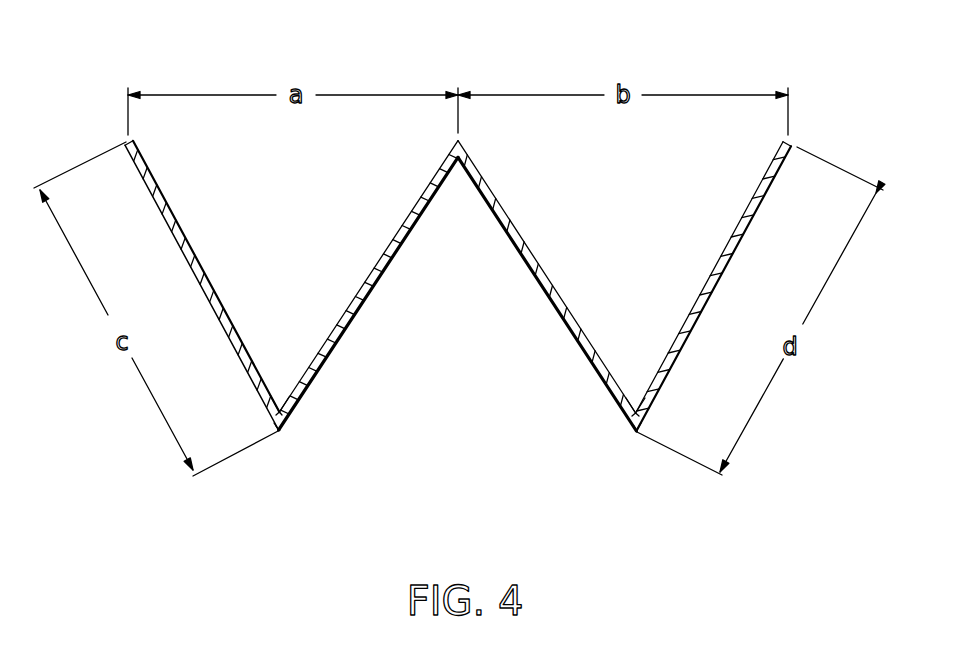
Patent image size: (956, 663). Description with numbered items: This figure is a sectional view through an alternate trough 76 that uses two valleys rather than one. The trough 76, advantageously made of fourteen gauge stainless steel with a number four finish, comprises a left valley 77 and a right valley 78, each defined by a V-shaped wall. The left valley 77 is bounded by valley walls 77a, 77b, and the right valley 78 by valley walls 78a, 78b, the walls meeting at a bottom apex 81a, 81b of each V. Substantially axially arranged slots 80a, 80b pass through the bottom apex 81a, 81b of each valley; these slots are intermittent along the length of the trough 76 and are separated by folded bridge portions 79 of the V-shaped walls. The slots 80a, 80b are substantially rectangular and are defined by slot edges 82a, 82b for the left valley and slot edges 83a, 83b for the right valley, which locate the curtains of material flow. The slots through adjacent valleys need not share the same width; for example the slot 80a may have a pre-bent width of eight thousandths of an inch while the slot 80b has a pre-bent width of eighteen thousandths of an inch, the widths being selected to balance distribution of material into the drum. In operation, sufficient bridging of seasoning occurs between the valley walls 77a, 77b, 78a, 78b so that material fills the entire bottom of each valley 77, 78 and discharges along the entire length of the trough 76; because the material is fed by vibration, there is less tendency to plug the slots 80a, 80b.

The trough 76 is at (489, 73).
The left valley 77 is at (291, 206).
The valley wall 77a is at (188, 243).
The valley wall 77b is at (362, 283).
The right valley 78 is at (638, 220).
The valley wall 78a is at (522, 237).
The valley wall 78b is at (703, 292).
The folded bridge portions 79 is at (284, 430).
The slot 80a is at (272, 440).
The slot 80b is at (622, 447).
The bottom apex 81a is at (278, 434).
The bottom apex 81b is at (636, 436).
The slot edge 82a is at (266, 408).
The slot edge 82b is at (291, 413).
The slot edge 83a is at (620, 414).
The slot edge 83b is at (651, 413).